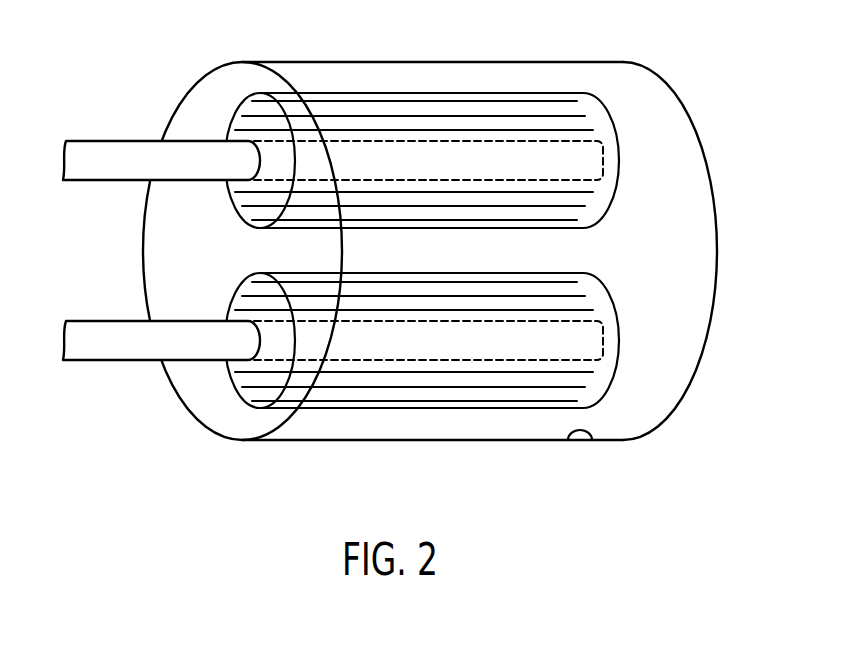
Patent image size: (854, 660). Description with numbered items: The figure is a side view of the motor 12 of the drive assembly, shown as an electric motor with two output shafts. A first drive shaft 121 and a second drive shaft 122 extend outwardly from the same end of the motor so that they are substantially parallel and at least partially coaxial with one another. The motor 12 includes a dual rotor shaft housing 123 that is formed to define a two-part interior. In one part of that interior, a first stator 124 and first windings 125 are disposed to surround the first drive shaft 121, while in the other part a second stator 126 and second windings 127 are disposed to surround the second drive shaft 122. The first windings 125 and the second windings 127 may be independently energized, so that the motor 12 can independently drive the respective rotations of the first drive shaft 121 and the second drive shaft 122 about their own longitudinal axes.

The motor 12 is at (607, 62).
The first drive shaft 121 is at (127, 140).
The second drive shaft 122 is at (127, 320).
The dual rotor shaft housing 123 is at (568, 440).
The first stator 124 is at (540, 93).
The first windings 125 is at (527, 130).
The second stator 126 is at (406, 440).
The second windings 127 is at (514, 387).